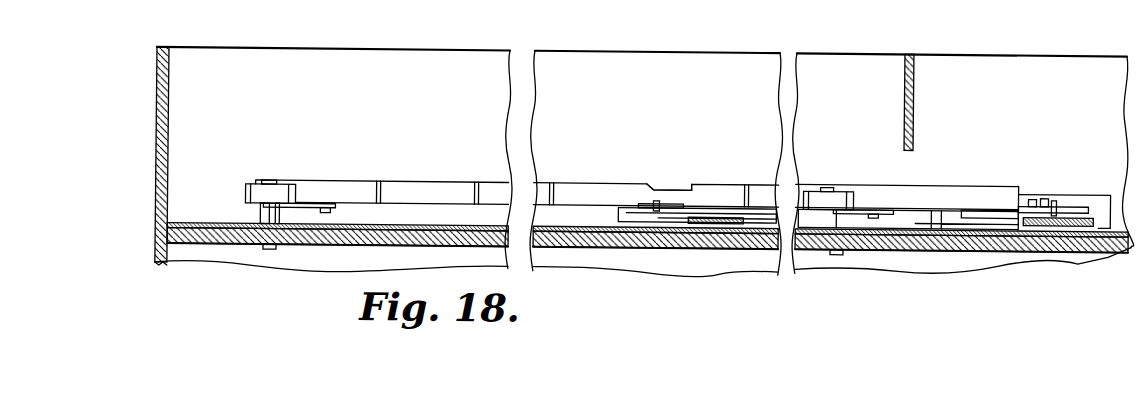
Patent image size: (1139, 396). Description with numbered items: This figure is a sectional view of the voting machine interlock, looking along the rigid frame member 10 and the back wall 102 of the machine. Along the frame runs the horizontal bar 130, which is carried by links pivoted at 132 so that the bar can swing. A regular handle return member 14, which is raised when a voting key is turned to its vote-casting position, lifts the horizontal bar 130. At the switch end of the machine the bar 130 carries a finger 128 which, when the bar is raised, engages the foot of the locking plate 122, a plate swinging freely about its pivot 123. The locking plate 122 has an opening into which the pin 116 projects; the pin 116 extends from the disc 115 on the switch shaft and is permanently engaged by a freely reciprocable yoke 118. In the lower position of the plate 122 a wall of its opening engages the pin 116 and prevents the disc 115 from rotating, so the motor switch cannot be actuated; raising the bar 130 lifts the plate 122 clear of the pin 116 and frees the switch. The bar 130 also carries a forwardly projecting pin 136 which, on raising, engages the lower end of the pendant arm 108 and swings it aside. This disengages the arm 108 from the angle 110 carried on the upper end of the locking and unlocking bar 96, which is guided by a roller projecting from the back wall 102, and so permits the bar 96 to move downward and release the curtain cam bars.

The rigid frame member 10 is at (163, 133).
The regular handle return member 14 is at (393, 201).
The locking and unlocking bar 96 is at (707, 244).
The back wall 102 is at (222, 245).
The pendant arm 108 is at (640, 205).
The angle 110 is at (668, 207).
The disc 115 is at (1070, 241).
The pin 116 is at (1058, 184).
The yoke 118 is at (1036, 181).
The locking plate 122 is at (1085, 191).
The pivot 123 is at (930, 204).
The finger 128 is at (985, 207).
The horizontal bar 130 is at (590, 191).
The pivot 132 is at (270, 179).
The pin 136 is at (662, 186).